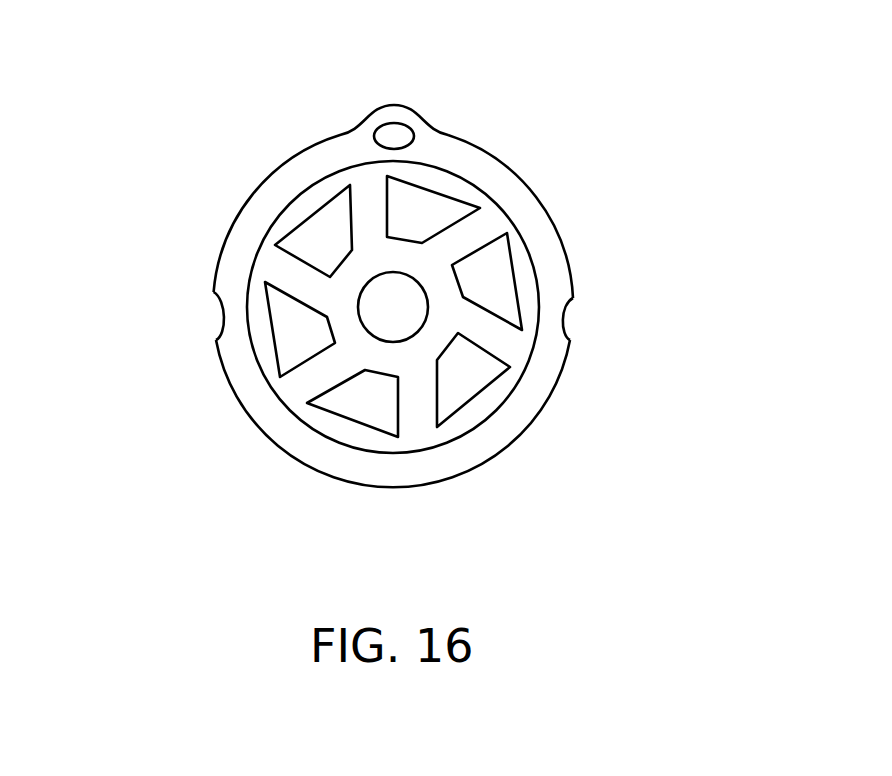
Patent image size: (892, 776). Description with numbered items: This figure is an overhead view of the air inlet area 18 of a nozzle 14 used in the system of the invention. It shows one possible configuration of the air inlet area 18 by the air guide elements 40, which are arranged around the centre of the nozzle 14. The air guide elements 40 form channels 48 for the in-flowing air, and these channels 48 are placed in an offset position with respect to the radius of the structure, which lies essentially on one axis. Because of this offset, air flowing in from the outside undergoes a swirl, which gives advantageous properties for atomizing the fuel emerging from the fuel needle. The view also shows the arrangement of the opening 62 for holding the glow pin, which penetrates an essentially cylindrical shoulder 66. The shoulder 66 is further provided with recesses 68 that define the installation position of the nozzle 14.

The nozzle 14 is at (206, 259).
The air inlet area 18 is at (395, 357).
The air guide elements 40 is at (316, 225).
The channels 48 is at (357, 212).
The opening 62 is at (390, 135).
The shoulder 66 is at (543, 412).
The recesses 68 is at (222, 318).